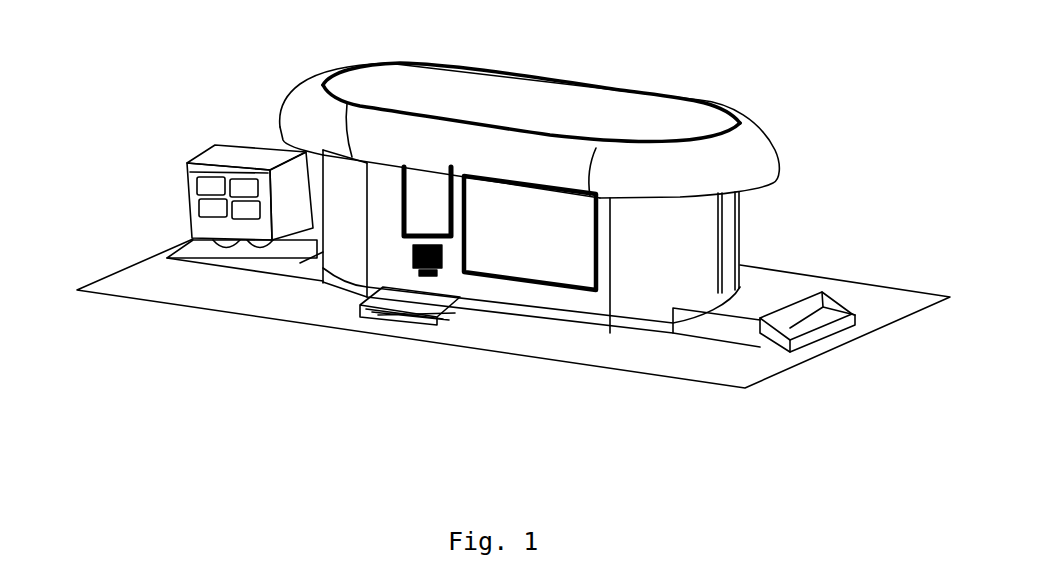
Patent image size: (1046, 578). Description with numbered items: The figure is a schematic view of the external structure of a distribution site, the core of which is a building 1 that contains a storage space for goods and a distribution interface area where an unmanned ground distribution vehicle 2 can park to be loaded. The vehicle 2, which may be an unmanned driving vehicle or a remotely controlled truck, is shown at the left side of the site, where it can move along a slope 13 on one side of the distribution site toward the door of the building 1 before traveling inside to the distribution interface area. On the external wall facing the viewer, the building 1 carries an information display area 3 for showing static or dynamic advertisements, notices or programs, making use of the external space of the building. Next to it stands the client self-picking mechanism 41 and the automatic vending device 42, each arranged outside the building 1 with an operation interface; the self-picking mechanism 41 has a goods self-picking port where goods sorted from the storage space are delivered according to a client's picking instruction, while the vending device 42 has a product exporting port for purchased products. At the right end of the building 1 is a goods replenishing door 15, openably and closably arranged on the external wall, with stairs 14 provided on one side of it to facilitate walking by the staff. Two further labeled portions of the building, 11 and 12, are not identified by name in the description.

The building 1 is at (587, 128).
The unmanned ground distribution vehicle 2 is at (233, 163).
The information display area 3 is at (518, 243).
The building body 11 is at (647, 253).
The roof band 12 is at (710, 178).
The slope 13 is at (262, 262).
The stairs 14 is at (773, 305).
The goods replenishing door 15 is at (727, 260).
The client self-picking mechanism 41 is at (330, 324).
The automatic vending device 42 is at (402, 258).